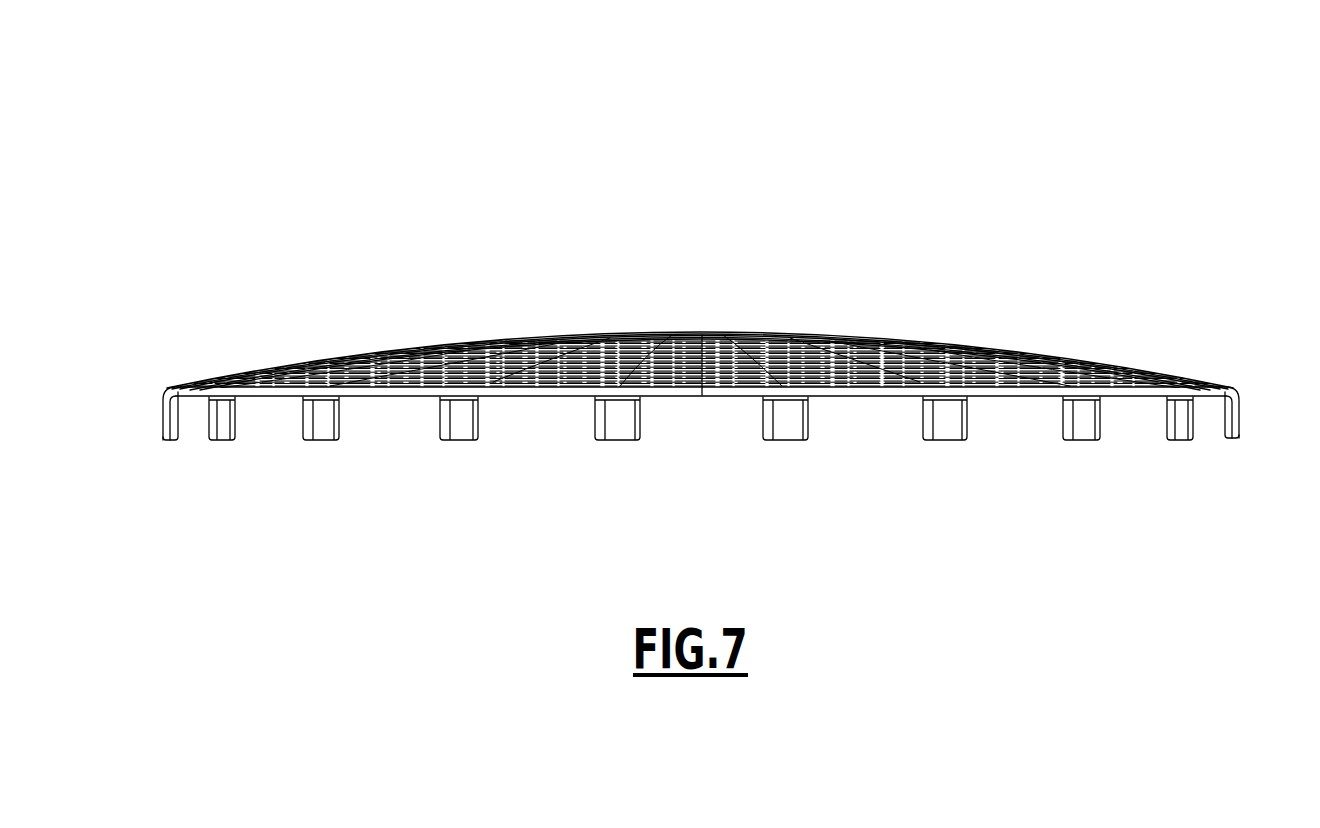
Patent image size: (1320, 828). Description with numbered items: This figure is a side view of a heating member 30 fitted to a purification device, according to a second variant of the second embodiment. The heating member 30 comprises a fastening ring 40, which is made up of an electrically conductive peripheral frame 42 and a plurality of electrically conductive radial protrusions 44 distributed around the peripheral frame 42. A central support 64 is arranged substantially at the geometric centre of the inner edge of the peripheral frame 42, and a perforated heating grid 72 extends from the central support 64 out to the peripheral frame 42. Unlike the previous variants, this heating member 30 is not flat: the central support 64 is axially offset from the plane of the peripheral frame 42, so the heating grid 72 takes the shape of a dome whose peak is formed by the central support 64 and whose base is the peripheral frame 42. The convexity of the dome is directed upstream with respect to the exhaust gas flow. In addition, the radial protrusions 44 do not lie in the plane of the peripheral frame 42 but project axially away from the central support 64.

The heating member 30 is at (212, 163).
The heating grid 72 is at (490, 325).
The central support 64 is at (702, 335).
The fastening ring 40 is at (1236, 377).
The peripheral frame 42 is at (855, 392).
The radial protrusions 44 is at (167, 420).